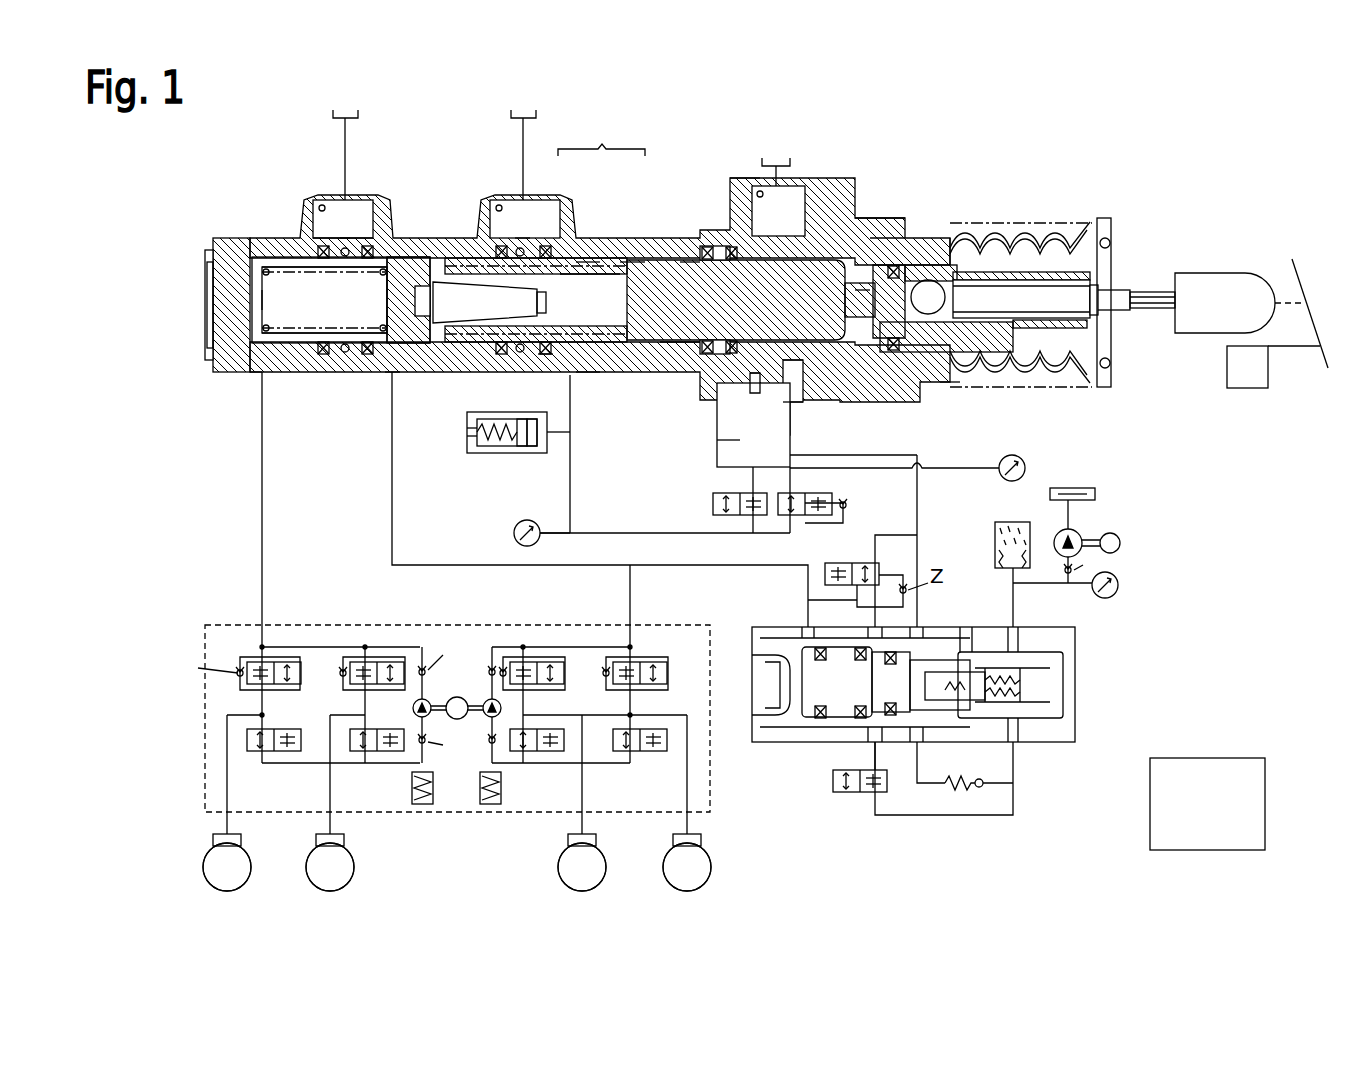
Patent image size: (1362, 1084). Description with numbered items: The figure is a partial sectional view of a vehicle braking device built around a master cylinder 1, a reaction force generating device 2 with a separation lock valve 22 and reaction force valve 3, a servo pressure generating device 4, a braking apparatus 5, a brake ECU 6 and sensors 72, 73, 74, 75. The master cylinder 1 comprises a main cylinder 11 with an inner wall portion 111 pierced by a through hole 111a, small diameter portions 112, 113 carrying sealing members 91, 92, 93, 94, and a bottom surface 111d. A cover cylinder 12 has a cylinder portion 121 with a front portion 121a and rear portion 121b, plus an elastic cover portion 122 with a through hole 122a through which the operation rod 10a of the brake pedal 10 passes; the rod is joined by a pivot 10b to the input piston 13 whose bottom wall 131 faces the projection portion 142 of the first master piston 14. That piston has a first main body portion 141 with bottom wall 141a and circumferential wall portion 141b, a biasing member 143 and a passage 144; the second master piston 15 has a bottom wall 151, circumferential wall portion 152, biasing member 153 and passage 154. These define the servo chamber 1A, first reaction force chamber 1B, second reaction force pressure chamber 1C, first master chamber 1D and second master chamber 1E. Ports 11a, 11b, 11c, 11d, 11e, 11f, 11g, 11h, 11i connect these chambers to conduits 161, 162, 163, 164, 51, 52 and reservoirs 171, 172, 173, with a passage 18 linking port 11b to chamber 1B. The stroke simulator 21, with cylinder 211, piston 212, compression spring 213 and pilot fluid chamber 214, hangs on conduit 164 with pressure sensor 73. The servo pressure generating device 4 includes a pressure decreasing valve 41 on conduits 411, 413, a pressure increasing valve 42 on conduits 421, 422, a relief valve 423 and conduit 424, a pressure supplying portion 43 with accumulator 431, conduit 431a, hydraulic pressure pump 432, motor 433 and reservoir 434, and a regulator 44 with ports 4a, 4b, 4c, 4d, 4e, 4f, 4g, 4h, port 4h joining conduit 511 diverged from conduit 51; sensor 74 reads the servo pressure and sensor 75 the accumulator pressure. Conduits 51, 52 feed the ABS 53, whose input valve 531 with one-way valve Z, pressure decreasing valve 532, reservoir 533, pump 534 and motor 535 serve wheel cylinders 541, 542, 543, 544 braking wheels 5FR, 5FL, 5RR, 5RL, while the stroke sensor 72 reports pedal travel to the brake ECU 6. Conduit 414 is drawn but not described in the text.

The master cylinder 1 is at (1239, 181).
The brake pedal 10 is at (1297, 268).
The operation rod 10a is at (1070, 295).
The pivot 10b is at (1015, 300).
The main cylinder 11 is at (232, 240).
The port 11a is at (790, 395).
The port 11b is at (808, 183).
The port 11c is at (757, 392).
The port 11d is at (748, 385).
The port 11e is at (583, 372).
The port 11f is at (527, 250).
The port 11g is at (410, 395).
The port 11h is at (355, 250).
The port 11i is at (258, 365).
The inner wall portion 111 is at (750, 285).
The through hole 111a is at (690, 262).
The bottom surface 111d is at (218, 330).
The small diameter portion 112 is at (545, 357).
The small diameter portion 113 is at (380, 348).
The cover cylinder 12 is at (1098, 435).
The cylinder portion 121 is at (1045, 420).
The front portion 121a is at (940, 382).
The rear portion 121b is at (963, 372).
The cover portion 122 is at (1100, 387).
The through hole 122a is at (1112, 280).
The input piston 13 is at (1000, 290).
The bottom wall 131 is at (945, 283).
The first master piston 14 is at (605, 356).
The first main body portion 141 is at (601, 137).
The bottom wall 141a is at (632, 262).
The circumferential wall portion 141b is at (587, 262).
The projection portion 142 is at (740, 198).
The biasing member 143 is at (450, 258).
The passage 144 is at (462, 268).
The second master piston 15 is at (438, 290).
The bottom wall 151 is at (420, 348).
The circumferential wall portion 152 is at (335, 355).
The biasing member 153 is at (280, 262).
The passage 154 is at (330, 210).
The conduit 161 is at (812, 455).
The conduit 162 is at (758, 438).
The conduit 163 is at (717, 440).
The conduit 164 is at (572, 430).
The reservoir 171 is at (776, 158).
The reservoir 172 is at (526, 140).
The reservoir 173 is at (344, 140).
The passage 18 is at (905, 262).
The servo chamber 1A is at (680, 345).
The first reaction force chamber 1B is at (878, 350).
The second reaction force pressure chamber 1C is at (640, 345).
The first master chamber 1D is at (445, 375).
The second master chamber 1E is at (283, 365).
The reaction force generating device 2 is at (500, 452).
The stroke simulator 21 is at (488, 413).
The cylinder 211 is at (500, 413).
The piston 212 is at (520, 445).
The compression spring 213 is at (480, 440).
The pilot fluid chamber 214 is at (530, 448).
The separation lock valve 22 is at (725, 496).
The reaction force valve 3 is at (790, 496).
The servo pressure generating device 4 is at (1007, 682).
The port 4a is at (1013, 628).
The port 4b is at (1013, 742).
The port 4c is at (966, 628).
The port 4d is at (917, 628).
The port 4e is at (918, 742).
The port 4f is at (880, 628).
The port 4g is at (875, 742).
The port 4h is at (805, 628).
The pressure decreasing valve 41 is at (837, 565).
The conduit 411 is at (890, 535).
The conduit 413 is at (860, 605).
The pipe 414 is at (918, 560).
The pressure increasing valve 42 is at (830, 790).
The conduit 421 is at (868, 755).
The conduit 422 is at (893, 815).
The relief valve 423 is at (962, 790).
The conduit 424 is at (915, 783).
The pressure supplying portion 43 is at (1105, 530).
The accumulator 431 is at (1010, 578).
The conduit 431a is at (1025, 584).
The hydraulic pressure pump 432 is at (1000, 540).
The motor 433 is at (1114, 533).
The reservoir 434 is at (1095, 494).
The regulator 44 is at (1077, 712).
The braking apparatus 5 is at (460, 744).
The conduit 51 is at (392, 512).
The conduit 511 is at (725, 565).
The conduit 52 is at (262, 522).
The ABS 53 is at (446, 711).
The input valve 531 is at (276, 662).
The pressure decreasing valve 532 is at (280, 729).
The reservoir 533 is at (428, 778).
The pump 534 is at (428, 702).
The motor 535 is at (462, 697).
The wheel cylinder 541 is at (230, 841).
The wheel cylinder 542 is at (333, 841).
The wheel cylinder 543 is at (586, 841).
The wheel cylinder 544 is at (690, 841).
The wheel 5FR is at (230, 891).
The wheel 5FL is at (334, 891).
The wheel 5RR is at (586, 891).
The wheel 5RL is at (690, 891).
The brake ECU 6 is at (1238, 758).
The stroke sensor 72 is at (1248, 388).
The pressure sensor 73 is at (530, 521).
The pressure sensor 74 is at (1000, 476).
The pressure sensor 75 is at (1108, 598).
The sealing member 91 is at (545, 250).
The sealing member 92 is at (495, 250).
The sealing member 93 is at (368, 250).
The sealing member 94 is at (320, 250).
The one-way valve Z is at (848, 504).